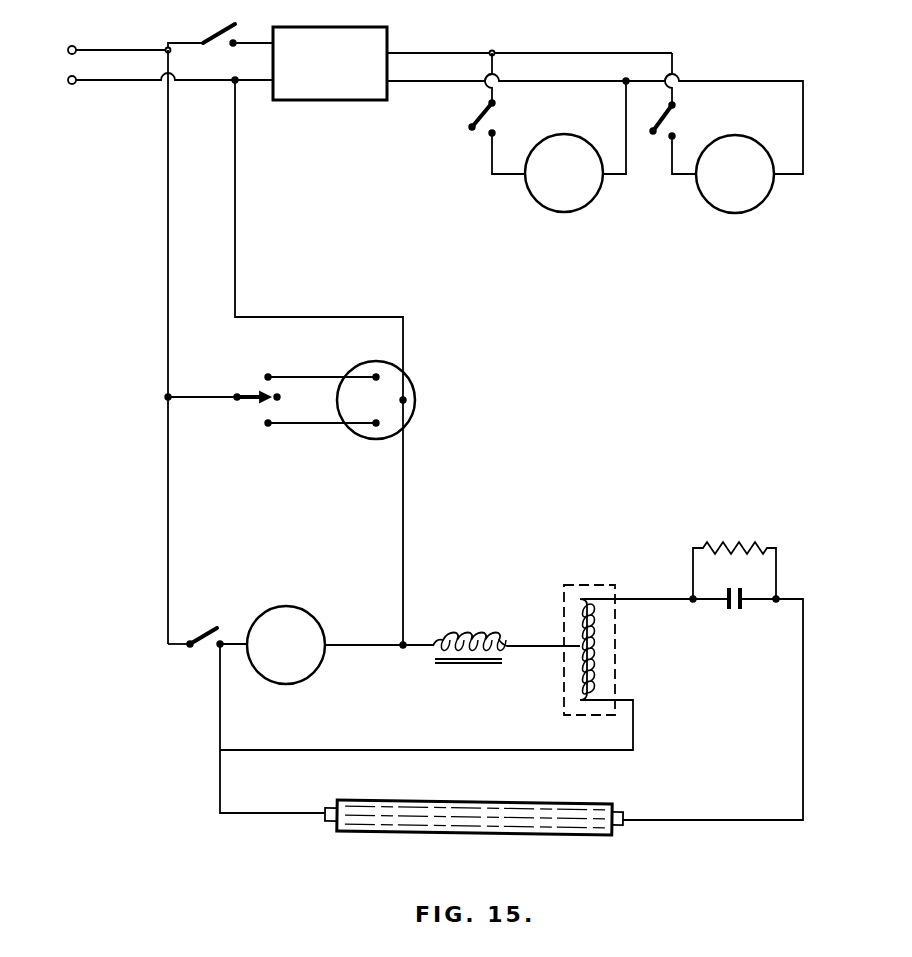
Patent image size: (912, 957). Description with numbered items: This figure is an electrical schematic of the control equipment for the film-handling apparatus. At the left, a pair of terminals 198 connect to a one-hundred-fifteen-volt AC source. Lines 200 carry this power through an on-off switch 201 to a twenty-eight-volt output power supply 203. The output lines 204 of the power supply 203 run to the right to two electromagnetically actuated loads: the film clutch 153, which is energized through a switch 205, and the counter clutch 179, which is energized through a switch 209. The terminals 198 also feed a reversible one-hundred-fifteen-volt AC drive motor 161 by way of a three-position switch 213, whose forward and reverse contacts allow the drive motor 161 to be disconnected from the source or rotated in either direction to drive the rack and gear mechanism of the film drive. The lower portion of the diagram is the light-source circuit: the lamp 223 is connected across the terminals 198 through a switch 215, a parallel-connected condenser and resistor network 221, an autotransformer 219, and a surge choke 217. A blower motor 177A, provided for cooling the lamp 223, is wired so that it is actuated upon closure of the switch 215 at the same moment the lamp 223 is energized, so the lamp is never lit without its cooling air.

The terminals 198 is at (53, 65).
The lines 200 is at (133, 72).
The on-off switch 201 is at (220, 34).
The 28-volt output power supply 203 is at (335, 36).
The output lines 204 is at (443, 70).
The switch 205 is at (479, 116).
The switch 209 is at (664, 120).
The film clutch 153 is at (568, 192).
The counter clutch 179 is at (735, 222).
The 3-positioned switch 213 is at (254, 400).
The drive motor 161 is at (413, 398).
The switch 215 is at (203, 632).
The blower motor 177A is at (288, 623).
The surge choke 217 is at (484, 628).
The autotransformer 219 is at (597, 673).
The capacitor and resistor network 221 is at (710, 567).
The lamp 223 is at (465, 820).